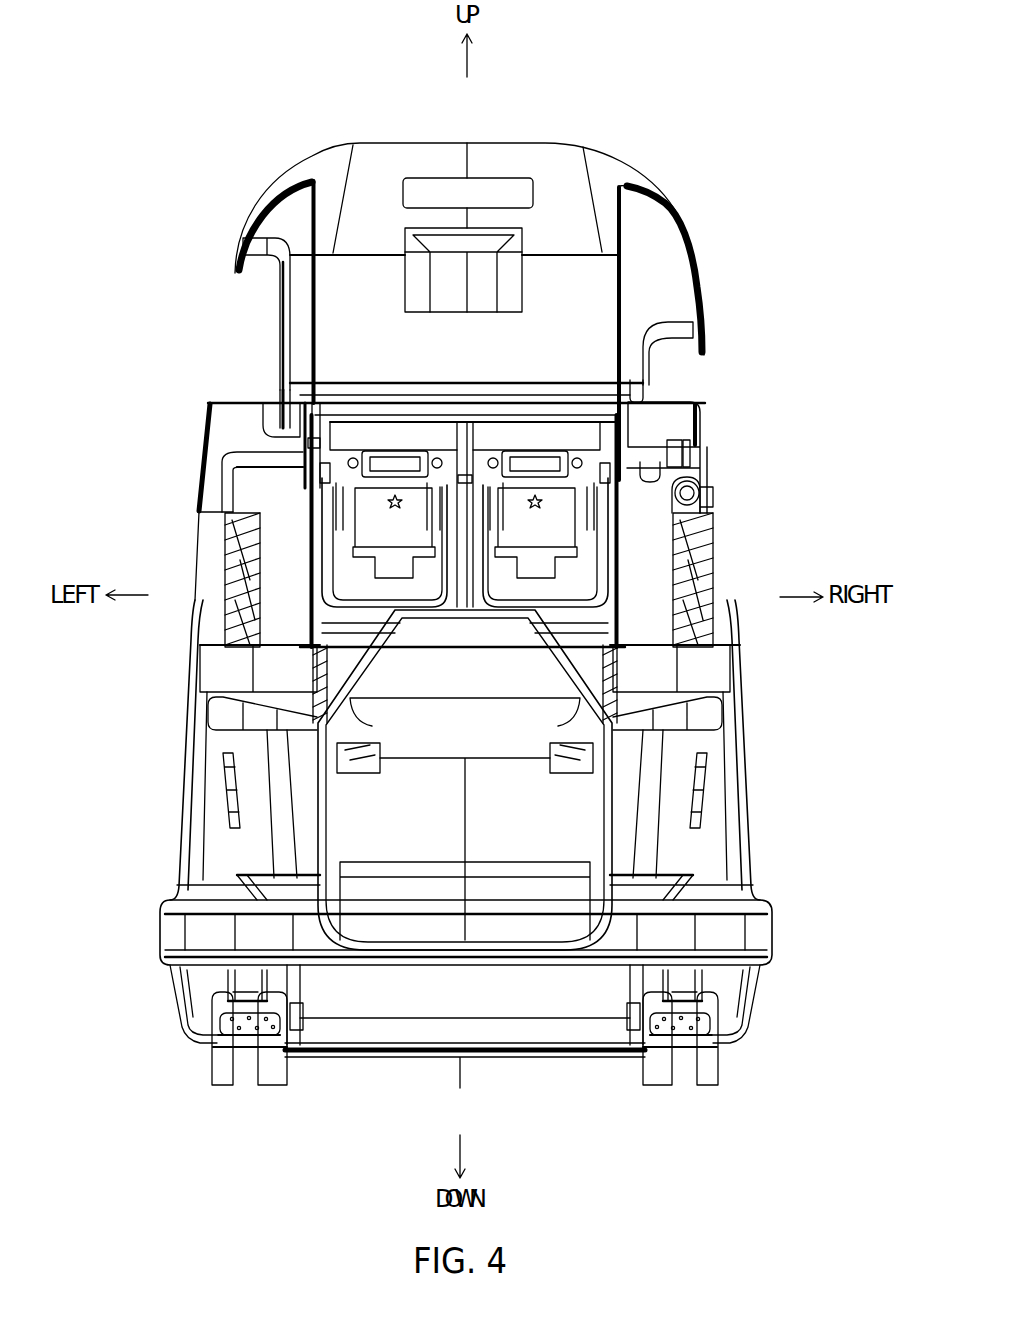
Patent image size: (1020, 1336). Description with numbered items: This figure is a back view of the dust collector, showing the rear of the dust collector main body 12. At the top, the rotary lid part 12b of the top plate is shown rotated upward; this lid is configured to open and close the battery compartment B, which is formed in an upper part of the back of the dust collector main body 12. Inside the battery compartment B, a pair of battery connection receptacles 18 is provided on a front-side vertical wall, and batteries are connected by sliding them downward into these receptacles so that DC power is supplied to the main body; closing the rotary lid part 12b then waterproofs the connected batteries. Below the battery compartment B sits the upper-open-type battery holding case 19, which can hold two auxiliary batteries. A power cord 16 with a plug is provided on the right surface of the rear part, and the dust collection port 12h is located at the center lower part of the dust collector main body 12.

The dust collector main body 12 is at (627, 105).
The rotary lid part 12b is at (382, 178).
The dust collection port 12h is at (420, 882).
The power cord 16 is at (711, 499).
The battery connection receptacles 18 is at (375, 507).
The battery holding case 19 is at (475, 715).
The battery compartment B is at (387, 430).